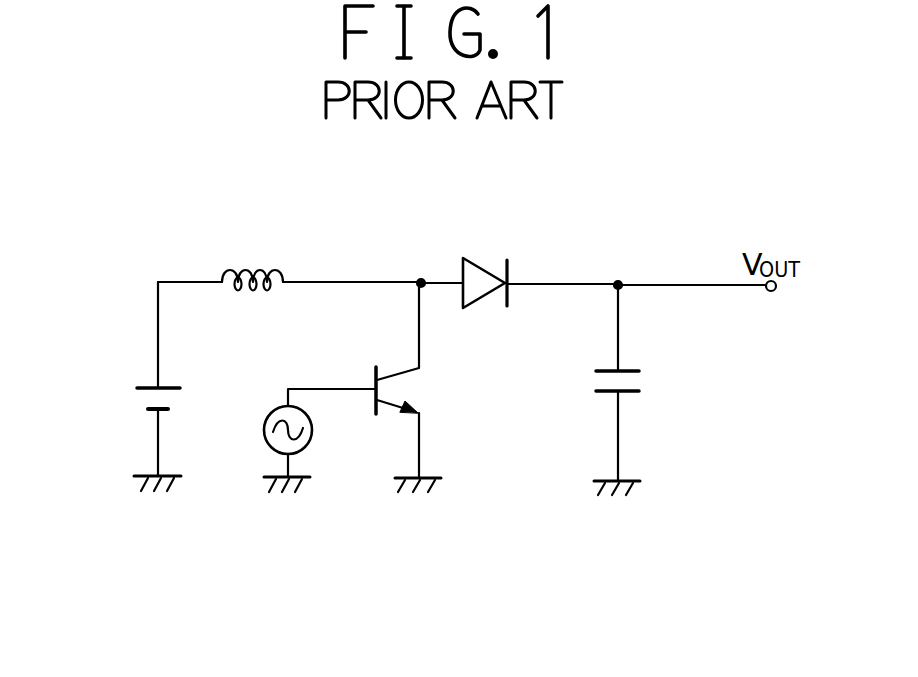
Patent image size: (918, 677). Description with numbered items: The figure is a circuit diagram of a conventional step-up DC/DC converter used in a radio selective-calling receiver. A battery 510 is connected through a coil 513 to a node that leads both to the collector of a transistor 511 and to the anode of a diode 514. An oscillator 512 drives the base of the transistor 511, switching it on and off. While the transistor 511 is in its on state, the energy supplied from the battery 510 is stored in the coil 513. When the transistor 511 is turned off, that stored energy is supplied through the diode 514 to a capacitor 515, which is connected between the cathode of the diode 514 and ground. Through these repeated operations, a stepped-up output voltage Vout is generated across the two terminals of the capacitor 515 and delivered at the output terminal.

The battery 510 is at (137, 393).
The transistor 511 is at (420, 397).
The oscillator 512 is at (263, 432).
The coil 513 is at (252, 268).
The diode 514 is at (482, 267).
The capacitor 515 is at (639, 381).